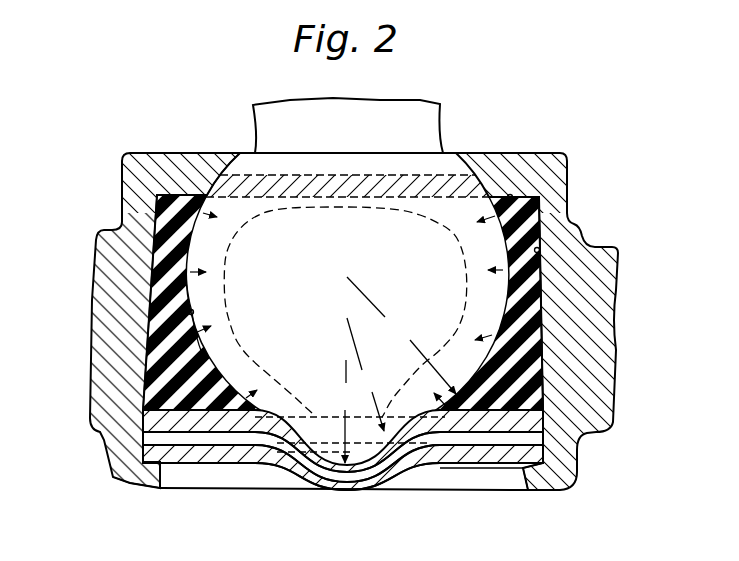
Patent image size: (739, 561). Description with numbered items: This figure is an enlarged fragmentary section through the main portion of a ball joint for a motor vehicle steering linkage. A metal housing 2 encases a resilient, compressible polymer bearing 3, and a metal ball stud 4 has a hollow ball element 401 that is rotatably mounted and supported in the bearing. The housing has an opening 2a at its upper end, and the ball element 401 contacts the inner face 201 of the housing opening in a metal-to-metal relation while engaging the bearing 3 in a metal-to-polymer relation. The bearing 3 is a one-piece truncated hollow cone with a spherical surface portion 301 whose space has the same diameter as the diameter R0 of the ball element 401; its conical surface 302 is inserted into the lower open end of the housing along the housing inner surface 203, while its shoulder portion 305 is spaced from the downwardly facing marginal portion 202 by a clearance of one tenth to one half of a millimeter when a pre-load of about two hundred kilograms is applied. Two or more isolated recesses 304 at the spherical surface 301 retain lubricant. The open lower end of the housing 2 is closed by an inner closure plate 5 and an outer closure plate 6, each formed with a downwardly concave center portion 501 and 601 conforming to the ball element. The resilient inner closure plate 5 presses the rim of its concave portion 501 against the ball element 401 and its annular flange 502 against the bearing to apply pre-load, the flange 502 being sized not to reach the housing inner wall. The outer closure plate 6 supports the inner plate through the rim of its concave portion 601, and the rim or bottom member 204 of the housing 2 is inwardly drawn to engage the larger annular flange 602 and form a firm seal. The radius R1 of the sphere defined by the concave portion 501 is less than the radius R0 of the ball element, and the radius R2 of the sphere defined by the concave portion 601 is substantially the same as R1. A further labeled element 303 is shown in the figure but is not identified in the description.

The housing 2 is at (113, 322).
The opening 2a is at (218, 153).
The bearing 3 is at (153, 286).
The ball stud 4 is at (416, 106).
The inner face of the housing opening 201 is at (473, 190).
The downwardly facing marginal portion 202 is at (510, 195).
The inner surface of the housing 203 is at (539, 250).
The rim of the housing 204 is at (537, 481).
The spherical surface portion 301 is at (189, 313).
The conical surface 302 is at (200, 356).
The diaphragm plate 303 is at (205, 410).
The isolated recesses 304 is at (220, 423).
The shoulder portion 305 is at (162, 193).
The ball element 401 is at (230, 205).
The inner closure plate 5 is at (206, 446).
The outer closure plate 6 is at (237, 453).
The concave portion 501 is at (285, 444).
The annular flange 502 is at (138, 475).
The concave portion 601 is at (373, 482).
The annular flange 602 is at (184, 465).
The radius of the ball element R0 is at (401, 335).
The radius of the inner concave portion sphere R1 is at (366, 374).
The radius of the outer concave portion sphere R2 is at (348, 411).